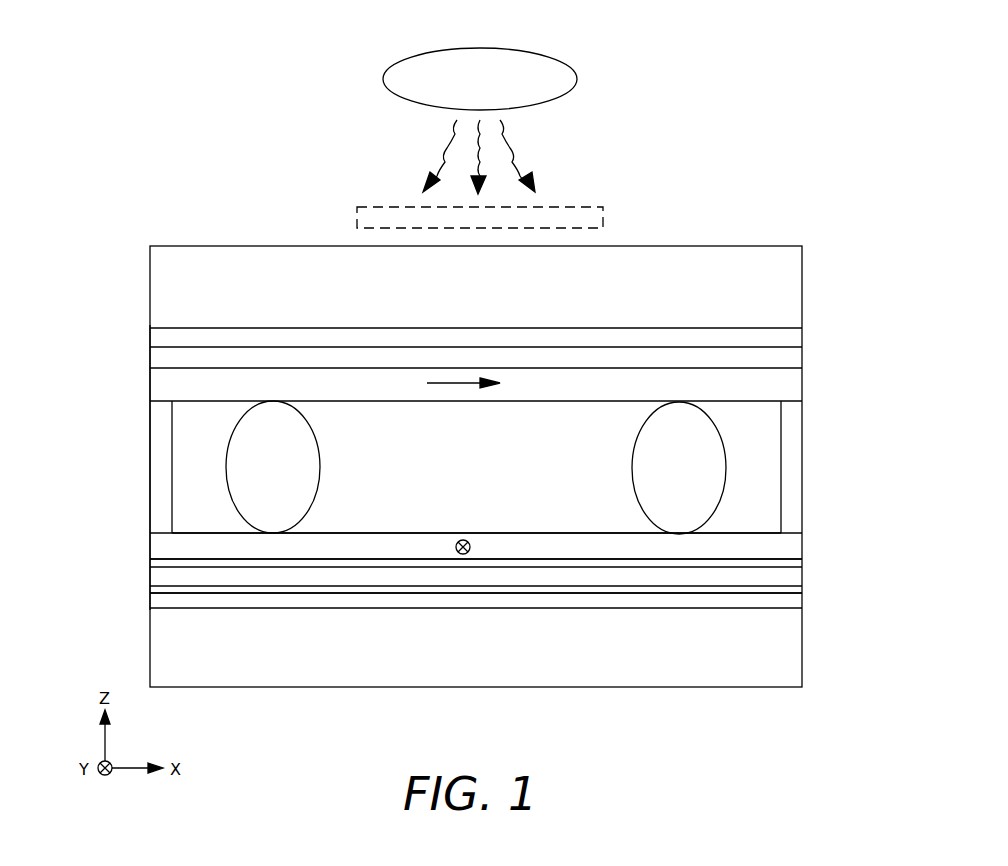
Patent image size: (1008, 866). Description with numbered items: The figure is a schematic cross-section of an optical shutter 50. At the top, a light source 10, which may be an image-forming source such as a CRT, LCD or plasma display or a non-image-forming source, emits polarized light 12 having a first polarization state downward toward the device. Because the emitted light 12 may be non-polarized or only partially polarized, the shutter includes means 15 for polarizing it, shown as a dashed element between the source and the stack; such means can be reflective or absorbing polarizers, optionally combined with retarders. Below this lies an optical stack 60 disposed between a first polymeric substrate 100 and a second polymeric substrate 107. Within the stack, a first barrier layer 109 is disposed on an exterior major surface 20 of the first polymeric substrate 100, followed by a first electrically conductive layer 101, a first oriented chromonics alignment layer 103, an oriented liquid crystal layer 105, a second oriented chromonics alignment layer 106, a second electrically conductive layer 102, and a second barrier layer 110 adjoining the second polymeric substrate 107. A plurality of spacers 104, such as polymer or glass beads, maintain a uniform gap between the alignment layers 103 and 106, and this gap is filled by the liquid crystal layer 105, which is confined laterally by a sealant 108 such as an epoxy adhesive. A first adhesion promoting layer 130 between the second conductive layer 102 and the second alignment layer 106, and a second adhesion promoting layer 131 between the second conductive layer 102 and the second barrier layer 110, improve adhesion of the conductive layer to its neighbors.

The light source 10 is at (533, 52).
The polarized light 12 is at (510, 145).
The means for polarizing 15 is at (603, 215).
The exterior major surface 20 is at (202, 246).
The optical shutter 50 is at (252, 148).
The optical stack 60 is at (100, 322).
The first polymeric substrate 100 is at (796, 272).
The first electrically conductive layer 101 is at (796, 354).
The second electrically conductive layer 102 is at (796, 574).
The first oriented chromonics alignment layer 103 is at (796, 392).
The spacers 104 is at (725, 450).
The oriented liquid crystal layer 105 is at (760, 511).
The second oriented chromonics alignment layer 106 is at (796, 541).
The second polymeric substrate 107 is at (796, 654).
The sealant 108 is at (796, 472).
The first barrier layer 109 is at (796, 331).
The second barrier layer 110 is at (796, 598).
The first adhesion promoting layer 130 is at (152, 563).
The second adhesion promoting layer 131 is at (152, 592).